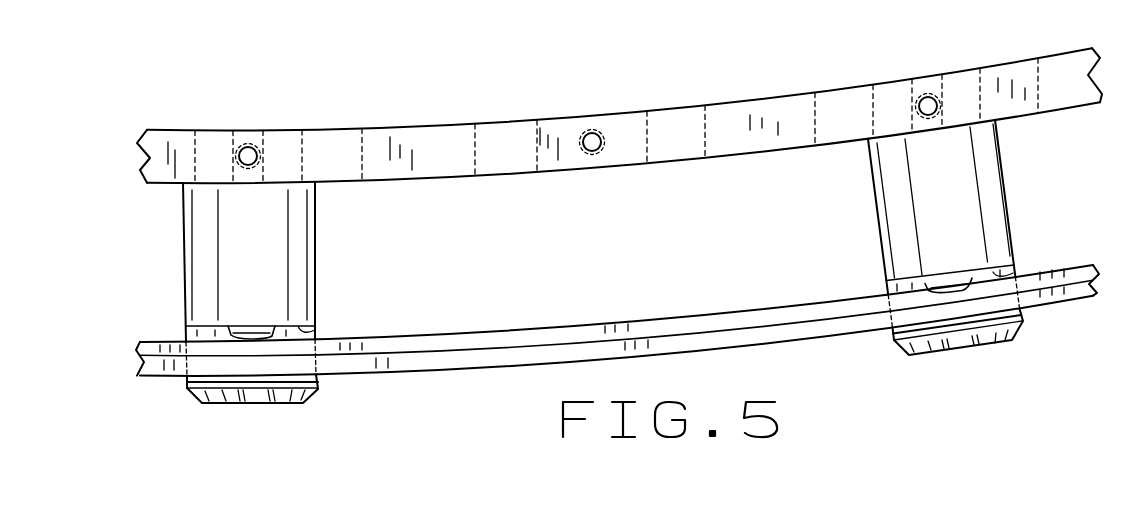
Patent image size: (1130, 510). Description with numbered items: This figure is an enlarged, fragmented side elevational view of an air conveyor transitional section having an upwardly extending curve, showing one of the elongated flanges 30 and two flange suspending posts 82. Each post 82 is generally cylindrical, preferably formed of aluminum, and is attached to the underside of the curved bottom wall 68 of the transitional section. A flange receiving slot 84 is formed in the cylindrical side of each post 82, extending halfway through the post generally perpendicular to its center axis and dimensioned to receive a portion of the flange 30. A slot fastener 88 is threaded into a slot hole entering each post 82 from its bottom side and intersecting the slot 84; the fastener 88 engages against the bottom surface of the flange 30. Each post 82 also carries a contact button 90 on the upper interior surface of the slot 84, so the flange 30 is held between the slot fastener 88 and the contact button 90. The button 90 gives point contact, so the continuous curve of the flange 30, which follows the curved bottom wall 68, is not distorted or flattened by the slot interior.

The curved bottom wall 68 is at (418, 176).
The elongated flange 30 is at (657, 318).
The flange suspending post 82 is at (317, 230).
The contact button 90 is at (257, 330).
The flange receiving slot 84 is at (318, 327).
The slot fastener 88 is at (318, 386).